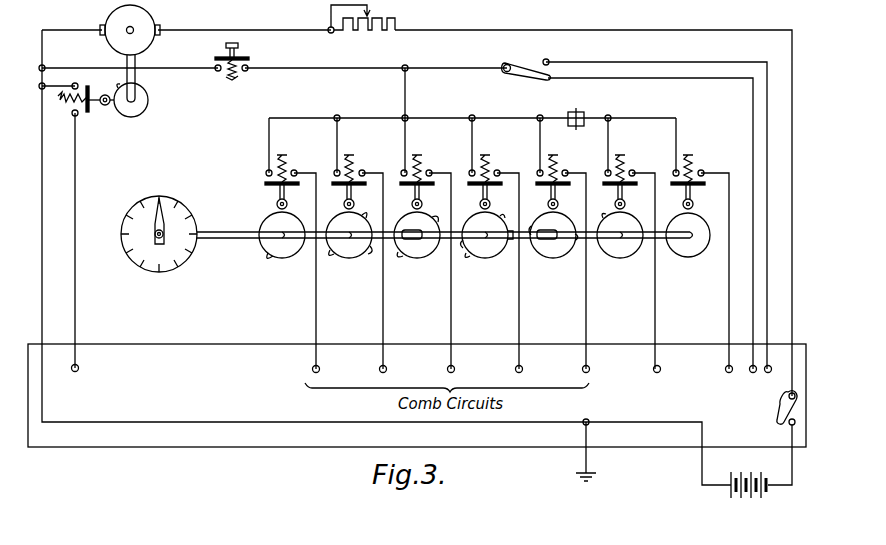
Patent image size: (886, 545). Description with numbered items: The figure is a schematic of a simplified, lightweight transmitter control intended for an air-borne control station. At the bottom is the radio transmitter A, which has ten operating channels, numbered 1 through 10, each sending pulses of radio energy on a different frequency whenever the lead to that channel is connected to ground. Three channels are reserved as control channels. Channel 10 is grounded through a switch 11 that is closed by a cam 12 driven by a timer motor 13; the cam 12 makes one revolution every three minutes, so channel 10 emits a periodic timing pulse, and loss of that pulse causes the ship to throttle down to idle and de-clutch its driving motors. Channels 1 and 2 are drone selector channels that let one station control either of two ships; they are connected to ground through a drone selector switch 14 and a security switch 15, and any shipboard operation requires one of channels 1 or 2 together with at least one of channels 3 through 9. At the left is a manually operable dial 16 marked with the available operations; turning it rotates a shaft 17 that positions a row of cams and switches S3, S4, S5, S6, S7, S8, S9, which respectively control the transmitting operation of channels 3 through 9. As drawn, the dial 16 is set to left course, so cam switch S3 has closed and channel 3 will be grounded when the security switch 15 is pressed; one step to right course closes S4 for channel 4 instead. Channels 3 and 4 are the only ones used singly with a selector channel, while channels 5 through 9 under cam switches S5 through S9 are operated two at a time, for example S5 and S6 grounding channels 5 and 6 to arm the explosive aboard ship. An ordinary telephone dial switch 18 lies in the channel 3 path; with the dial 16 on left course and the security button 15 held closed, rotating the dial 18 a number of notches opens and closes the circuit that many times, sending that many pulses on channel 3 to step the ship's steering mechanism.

The drone selector channel 1 is at (769, 377).
The drone selector channel 2 is at (752, 377).
The transmitter channel 3 is at (728, 377).
The transmitter channel 4 is at (656, 377).
The transmitter channel 5 is at (585, 377).
The transmitter channel 6 is at (518, 377).
The transmitter channel 7 is at (450, 377).
The transmitter channel 8 is at (382, 377).
The transmitter channel 9 is at (315, 377).
The timing control channel 10 is at (75, 377).
The switch 11 is at (91, 112).
The cam 12 is at (149, 104).
The timer motor 13 is at (153, 16).
The drone selector switch 14 is at (510, 84).
The security switch 15 is at (212, 51).
The manually operable dial 16 is at (166, 221).
The shaft 17 is at (445, 248).
The telephone dial switch 18 is at (572, 111).
The cam switch S3 is at (684, 262).
The cam switch S4 is at (616, 262).
The cam switch S5 is at (549, 262).
The cam switch S6 is at (481, 262).
The cam switch S7 is at (413, 262).
The cam switch S8 is at (345, 262).
The cam switch S9 is at (278, 262).
The radio transmitter A is at (148, 437).